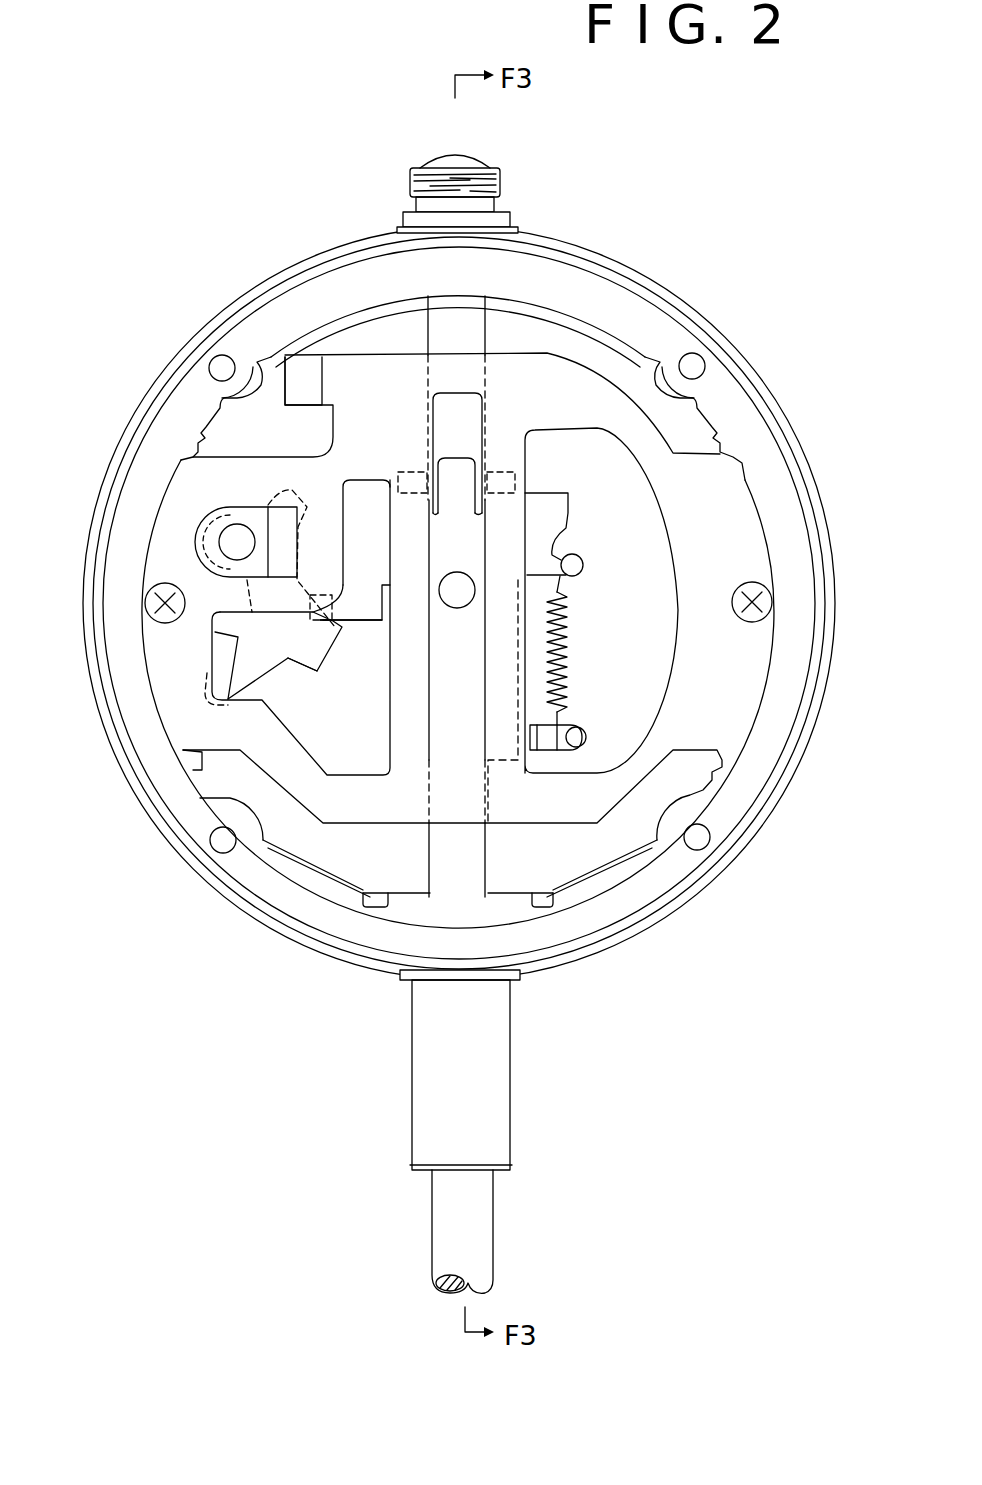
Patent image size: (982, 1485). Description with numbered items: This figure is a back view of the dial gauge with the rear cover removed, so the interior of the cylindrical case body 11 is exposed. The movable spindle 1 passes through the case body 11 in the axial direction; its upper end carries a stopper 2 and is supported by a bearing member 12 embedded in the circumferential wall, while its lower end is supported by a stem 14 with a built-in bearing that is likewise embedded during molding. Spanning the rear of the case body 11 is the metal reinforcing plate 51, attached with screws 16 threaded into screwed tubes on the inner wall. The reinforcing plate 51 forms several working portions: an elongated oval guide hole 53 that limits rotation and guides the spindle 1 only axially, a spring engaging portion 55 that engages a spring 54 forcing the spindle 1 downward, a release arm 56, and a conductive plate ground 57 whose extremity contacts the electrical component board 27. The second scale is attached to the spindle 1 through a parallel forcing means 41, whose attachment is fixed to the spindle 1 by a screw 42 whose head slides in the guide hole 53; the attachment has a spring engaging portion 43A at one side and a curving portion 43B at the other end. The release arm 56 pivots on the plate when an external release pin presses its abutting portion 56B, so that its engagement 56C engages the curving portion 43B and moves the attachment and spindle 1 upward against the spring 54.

The spindle 1 is at (443, 1257).
The stopper 2 is at (460, 164).
The case body 11 is at (655, 290).
The bearing member 12 is at (410, 178).
The stem 14 is at (427, 1108).
The screws 16 is at (162, 624).
The electrical component board 27 is at (612, 848).
The parallel forcing means 41 is at (560, 515).
The screw 42 is at (447, 573).
The spring engaging portion 43A is at (584, 567).
The curving portion 43B is at (362, 612).
The reinforcing plate 51 is at (742, 497).
The guide hole 53 is at (478, 390).
The spring 54 is at (567, 628).
The spring engaging portion 55 is at (584, 725).
The release arm 56 is at (267, 653).
The abutting portion 56B is at (218, 670).
The engagement 56C is at (320, 673).
The plate ground 57 is at (298, 368).